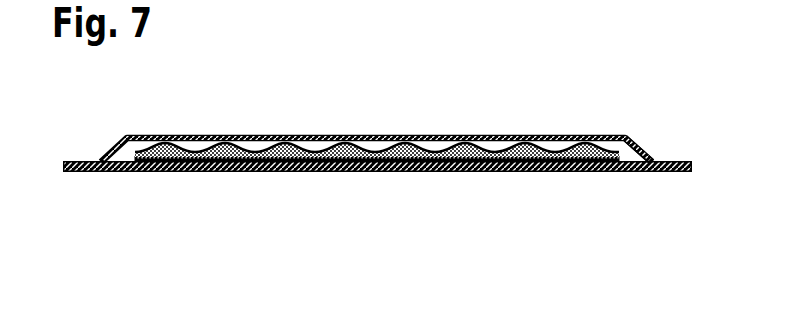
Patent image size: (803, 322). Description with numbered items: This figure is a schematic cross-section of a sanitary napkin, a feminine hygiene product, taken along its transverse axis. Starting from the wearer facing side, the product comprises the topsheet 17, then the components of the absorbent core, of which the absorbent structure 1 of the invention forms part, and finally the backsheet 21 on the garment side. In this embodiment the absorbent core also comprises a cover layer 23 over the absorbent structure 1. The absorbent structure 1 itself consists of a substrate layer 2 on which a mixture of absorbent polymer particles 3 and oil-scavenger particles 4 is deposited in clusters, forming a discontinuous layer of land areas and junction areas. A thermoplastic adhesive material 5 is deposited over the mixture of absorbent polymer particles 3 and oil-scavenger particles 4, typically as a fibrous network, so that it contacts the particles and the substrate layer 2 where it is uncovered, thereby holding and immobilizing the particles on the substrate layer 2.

The absorbent structure 1 is at (377, 154).
The substrate layer 2 is at (377, 208).
The absorbent polymer particles 3 is at (376, 107).
The oil-scavenger particles 4 is at (285, 145).
The thermoplastic adhesive material 5 is at (428, 145).
The topsheet 17 is at (503, 136).
The backsheet 21 is at (413, 172).
The cover layer 23 is at (610, 137).